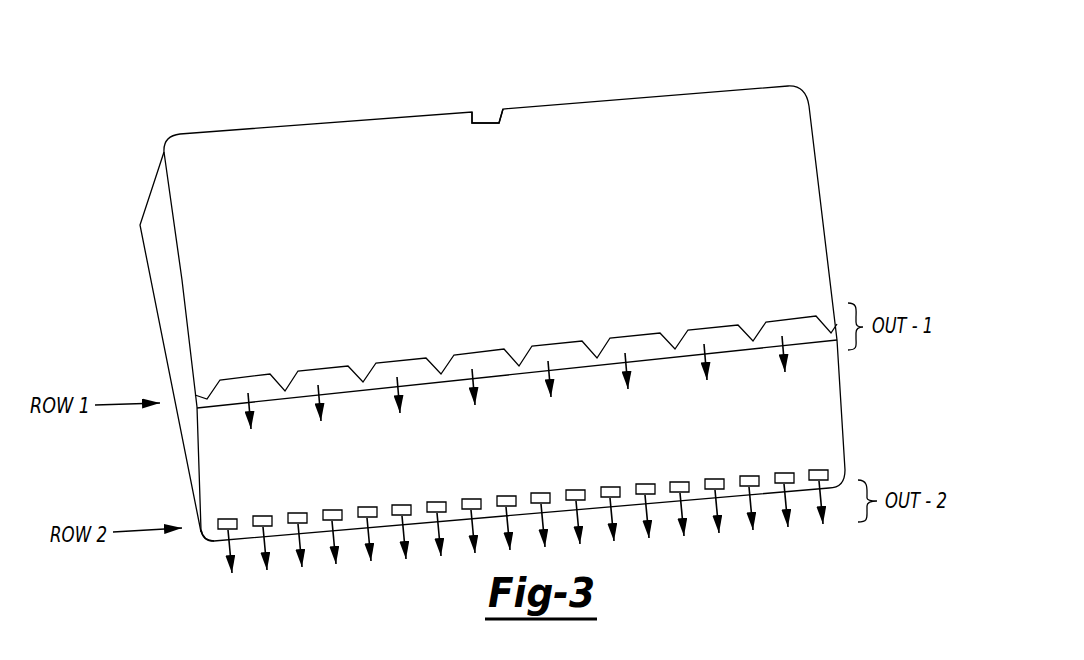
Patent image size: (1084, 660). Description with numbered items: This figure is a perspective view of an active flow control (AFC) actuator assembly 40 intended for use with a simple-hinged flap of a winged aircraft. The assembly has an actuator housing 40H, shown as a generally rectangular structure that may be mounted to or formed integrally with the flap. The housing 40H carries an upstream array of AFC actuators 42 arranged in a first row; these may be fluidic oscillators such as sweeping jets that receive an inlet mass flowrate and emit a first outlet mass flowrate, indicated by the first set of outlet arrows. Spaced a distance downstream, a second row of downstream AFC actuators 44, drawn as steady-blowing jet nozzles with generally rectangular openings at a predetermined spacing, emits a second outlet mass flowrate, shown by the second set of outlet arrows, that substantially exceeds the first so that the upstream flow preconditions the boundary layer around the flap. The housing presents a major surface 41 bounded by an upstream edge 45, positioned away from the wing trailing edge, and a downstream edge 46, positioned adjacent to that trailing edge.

The AFC actuator assembly 40 is at (862, 128).
The actuator housing 40H is at (819, 196).
The major surface 41 is at (511, 219).
The upstream AFC actuators 42 is at (398, 372).
The downstream AFC actuators 44 is at (227, 517).
The upstream edge 45 is at (645, 97).
The downstream edge 46 is at (204, 538).